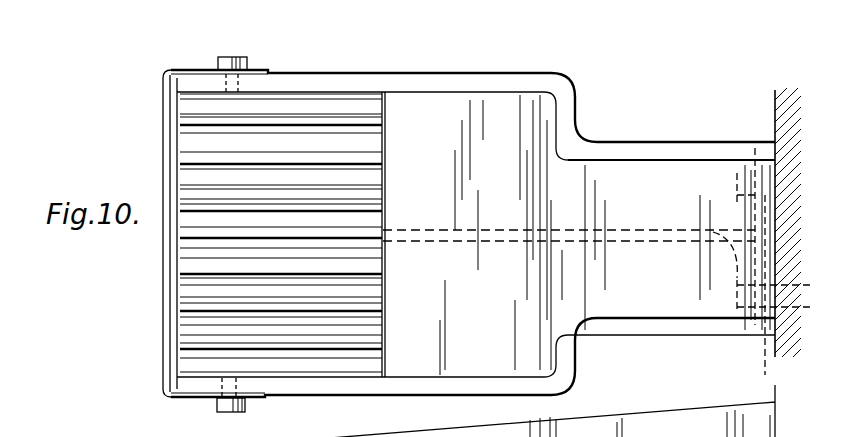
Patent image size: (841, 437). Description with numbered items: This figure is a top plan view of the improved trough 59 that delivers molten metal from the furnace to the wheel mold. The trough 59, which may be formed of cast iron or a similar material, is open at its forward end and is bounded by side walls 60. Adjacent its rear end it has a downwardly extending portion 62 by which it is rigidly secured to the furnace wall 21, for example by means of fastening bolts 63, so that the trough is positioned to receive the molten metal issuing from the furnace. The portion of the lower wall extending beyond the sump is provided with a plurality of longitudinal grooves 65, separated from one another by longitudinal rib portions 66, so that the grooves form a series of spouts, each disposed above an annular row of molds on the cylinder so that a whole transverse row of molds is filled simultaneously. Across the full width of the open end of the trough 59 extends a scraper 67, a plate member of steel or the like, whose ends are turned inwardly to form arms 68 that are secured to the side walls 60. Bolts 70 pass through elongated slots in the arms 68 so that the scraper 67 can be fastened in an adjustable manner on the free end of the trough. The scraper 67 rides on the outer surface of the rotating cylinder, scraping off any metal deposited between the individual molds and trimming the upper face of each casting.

The furnace wall 21 is at (775, 101).
The trough 59 is at (564, 110).
The side walls 60 is at (419, 72).
The downwardly extending portion 62 is at (764, 352).
The fastening bolts 63 is at (737, 190).
The longitudinal grooves 65 is at (368, 330).
The longitudinal rib portions 66 is at (384, 227).
The scraper 67 is at (164, 345).
The arms 68 is at (192, 69).
The bolts 70 is at (240, 57).